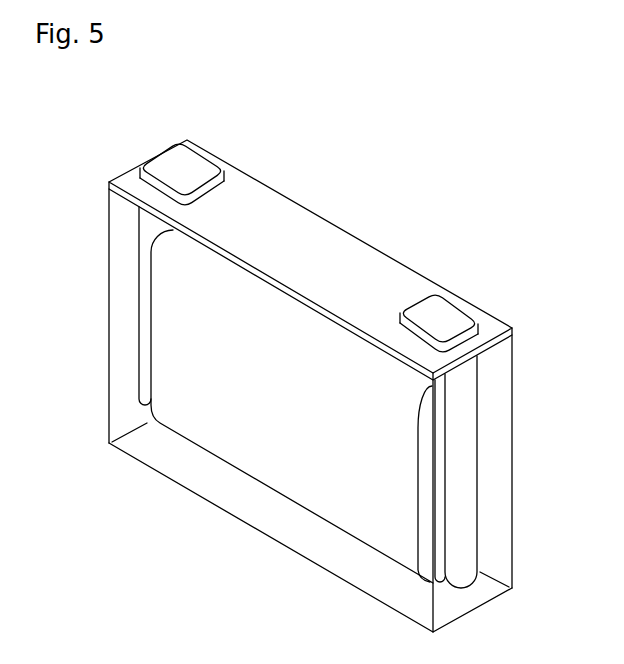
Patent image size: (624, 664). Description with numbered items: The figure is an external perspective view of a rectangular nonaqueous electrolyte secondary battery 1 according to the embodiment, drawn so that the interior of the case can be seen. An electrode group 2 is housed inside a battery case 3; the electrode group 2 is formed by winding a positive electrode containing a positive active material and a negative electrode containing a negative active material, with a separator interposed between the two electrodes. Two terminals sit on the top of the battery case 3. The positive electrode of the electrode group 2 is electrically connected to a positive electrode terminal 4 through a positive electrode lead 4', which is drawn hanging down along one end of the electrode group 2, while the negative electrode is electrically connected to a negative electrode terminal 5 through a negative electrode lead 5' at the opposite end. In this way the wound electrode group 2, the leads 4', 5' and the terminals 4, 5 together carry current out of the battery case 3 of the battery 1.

The nonaqueous electrolyte secondary battery 1 is at (305, 360).
The electrode group 2 is at (292, 406).
The battery case 3 is at (108, 273).
The positive electrode terminal 4 is at (182, 146).
The positive electrode lead 4' is at (102, 306).
The negative electrode terminal 5 is at (439, 291).
The negative electrode lead 5' is at (498, 472).